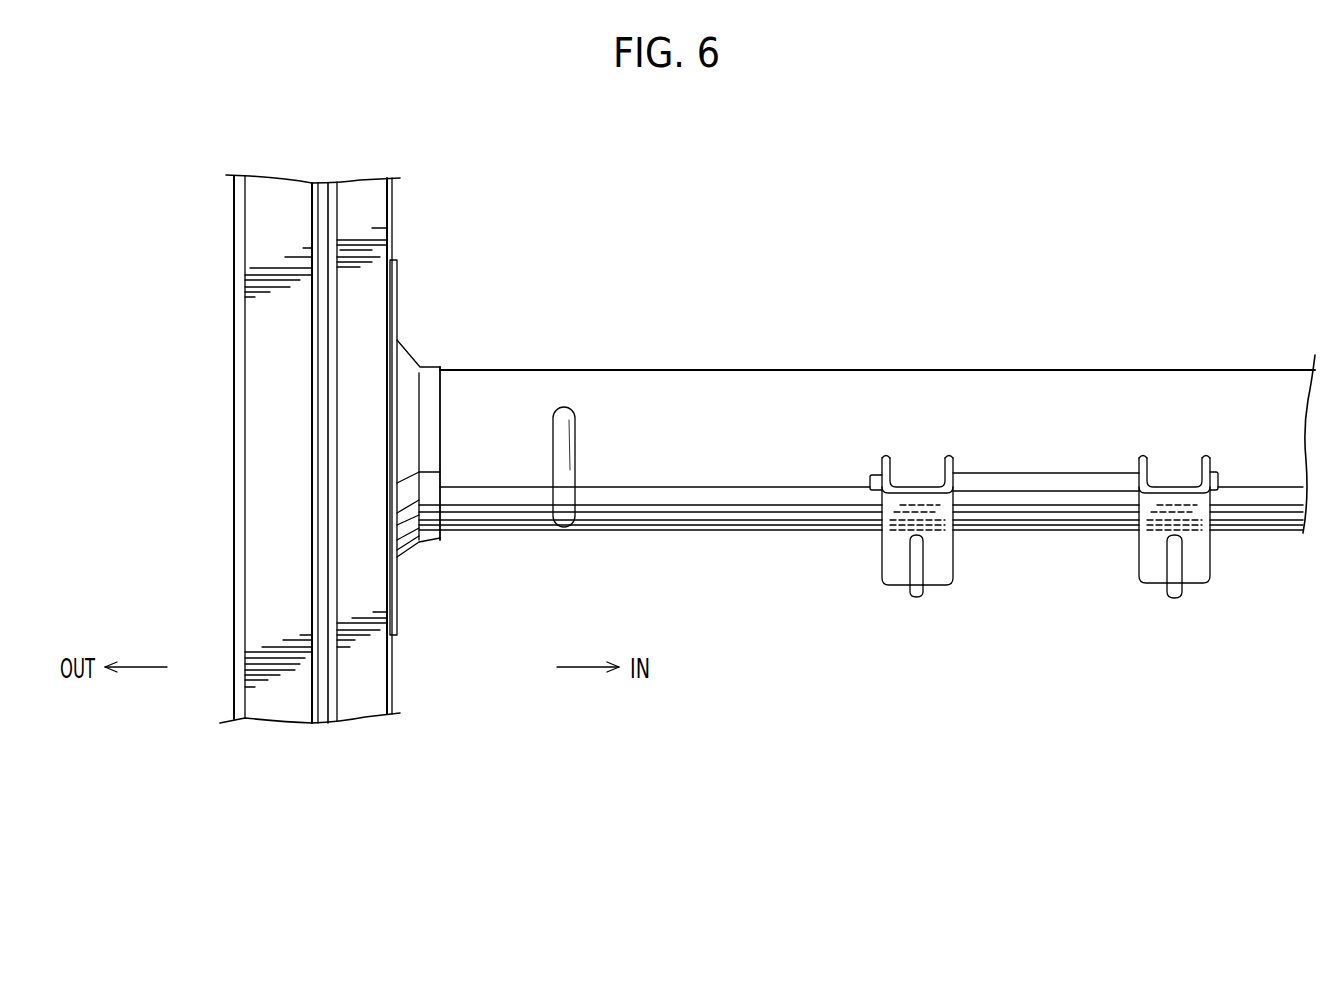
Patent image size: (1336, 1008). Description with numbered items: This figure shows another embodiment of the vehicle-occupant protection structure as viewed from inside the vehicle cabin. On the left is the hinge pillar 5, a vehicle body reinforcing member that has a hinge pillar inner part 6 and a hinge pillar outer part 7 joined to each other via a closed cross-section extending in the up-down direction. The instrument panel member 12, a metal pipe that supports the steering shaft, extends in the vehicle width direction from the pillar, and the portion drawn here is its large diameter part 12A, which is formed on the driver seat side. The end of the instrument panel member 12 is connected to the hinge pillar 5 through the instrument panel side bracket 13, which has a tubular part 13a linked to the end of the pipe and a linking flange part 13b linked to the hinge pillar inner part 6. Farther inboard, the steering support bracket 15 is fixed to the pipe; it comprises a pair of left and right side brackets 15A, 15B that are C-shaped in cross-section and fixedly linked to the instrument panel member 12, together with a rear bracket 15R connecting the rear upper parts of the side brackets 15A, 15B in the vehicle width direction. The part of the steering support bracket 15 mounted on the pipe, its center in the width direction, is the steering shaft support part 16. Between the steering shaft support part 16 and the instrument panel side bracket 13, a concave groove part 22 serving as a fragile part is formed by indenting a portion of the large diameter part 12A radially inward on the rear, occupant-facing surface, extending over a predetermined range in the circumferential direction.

The hinge pillar 5 is at (306, 448).
The hinge pillar inner part 6 is at (360, 298).
The hinge pillar outer part 7 is at (262, 380).
The instrument panel member 12 is at (877, 405).
The large diameter part 12A is at (853, 400).
The instrument panel side bracket 13 is at (456, 428).
The tubular part 13a is at (432, 432).
The linking flange part 13b is at (398, 268).
The steering support bracket 15 is at (1043, 499).
The side bracket 15A is at (881, 568).
The side bracket 15B is at (1215, 563).
The rear bracket 15R is at (1045, 473).
The steering shaft support part 16 is at (1064, 540).
The concave groove part 22 is at (557, 530).